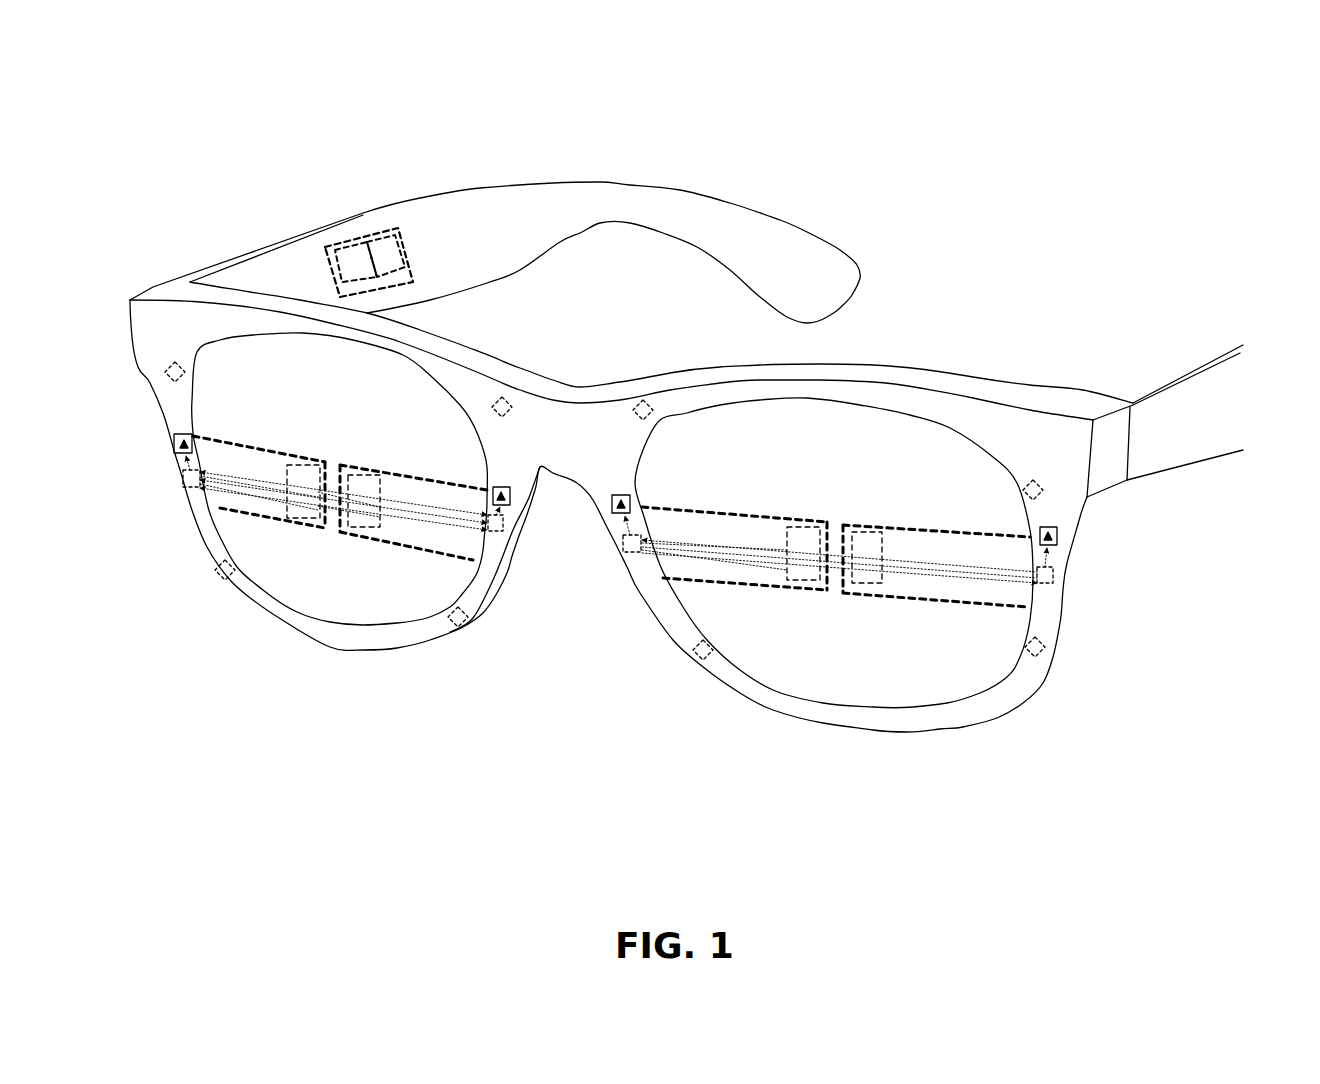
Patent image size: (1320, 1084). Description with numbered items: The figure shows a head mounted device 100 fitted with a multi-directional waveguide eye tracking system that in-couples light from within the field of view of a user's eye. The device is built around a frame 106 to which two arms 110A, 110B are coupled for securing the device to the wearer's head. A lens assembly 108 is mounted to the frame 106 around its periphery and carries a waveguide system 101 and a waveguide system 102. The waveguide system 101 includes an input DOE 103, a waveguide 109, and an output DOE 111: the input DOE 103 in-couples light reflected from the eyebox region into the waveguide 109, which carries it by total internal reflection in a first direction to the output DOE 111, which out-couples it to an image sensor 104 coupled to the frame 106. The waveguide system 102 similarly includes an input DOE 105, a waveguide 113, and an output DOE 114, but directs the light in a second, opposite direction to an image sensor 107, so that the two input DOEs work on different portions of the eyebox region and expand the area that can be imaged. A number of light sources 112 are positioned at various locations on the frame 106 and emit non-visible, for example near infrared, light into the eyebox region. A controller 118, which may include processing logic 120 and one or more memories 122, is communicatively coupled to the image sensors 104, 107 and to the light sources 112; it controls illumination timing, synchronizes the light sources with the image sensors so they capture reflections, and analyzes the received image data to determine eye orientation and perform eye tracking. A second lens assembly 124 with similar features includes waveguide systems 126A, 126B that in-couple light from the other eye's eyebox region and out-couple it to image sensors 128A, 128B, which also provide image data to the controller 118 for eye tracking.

The head mounted device 100 is at (690, 61).
The arm 110A is at (557, 223).
The arm 110B is at (1213, 428).
The controller 118 is at (453, 286).
The processing logic 120 is at (388, 262).
The memories 122 is at (350, 268).
The light sources 112 is at (200, 379).
The lens assembly 108 is at (352, 398).
The lens assembly 124 is at (844, 448).
The frame 106 is at (574, 435).
The waveguide 109 is at (222, 448).
The waveguide system 101 is at (262, 536).
The waveguide system 102 is at (408, 563).
The input DOE 103 is at (307, 477).
The input DOE 105 is at (352, 477).
The waveguide 113 is at (462, 497).
The image sensor 104 is at (174, 443).
The output DOE 111 is at (183, 478).
The image sensor 107 is at (500, 487).
The output DOE 114 is at (500, 532).
The image sensor 128A is at (612, 505).
The image sensor 128B is at (1057, 533).
The waveguide system 126A is at (740, 603).
The waveguide system 126B is at (941, 612).